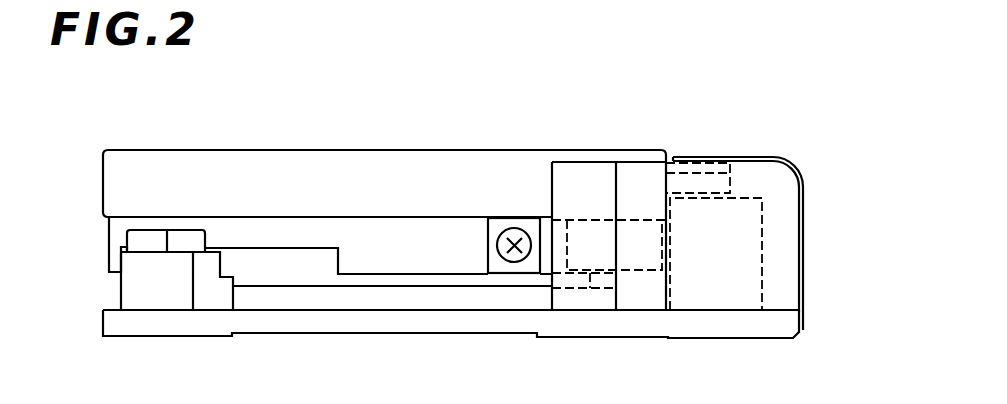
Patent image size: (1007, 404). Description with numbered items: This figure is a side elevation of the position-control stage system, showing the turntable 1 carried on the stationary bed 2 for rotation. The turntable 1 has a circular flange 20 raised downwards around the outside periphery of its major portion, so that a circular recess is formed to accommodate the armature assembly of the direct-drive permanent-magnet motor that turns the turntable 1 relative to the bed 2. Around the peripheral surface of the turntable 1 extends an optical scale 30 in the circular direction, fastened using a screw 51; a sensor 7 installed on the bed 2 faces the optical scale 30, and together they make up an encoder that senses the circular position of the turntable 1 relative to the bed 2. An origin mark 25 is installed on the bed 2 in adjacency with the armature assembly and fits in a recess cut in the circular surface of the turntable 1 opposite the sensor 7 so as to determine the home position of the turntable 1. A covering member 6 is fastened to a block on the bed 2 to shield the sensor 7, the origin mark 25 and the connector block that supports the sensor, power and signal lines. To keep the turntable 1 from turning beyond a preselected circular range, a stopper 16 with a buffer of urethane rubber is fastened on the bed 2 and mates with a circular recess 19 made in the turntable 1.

The turntable 1 is at (171, 176).
The stationary bed 2 is at (175, 323).
The covering member 6 is at (804, 188).
The sensor 7 is at (740, 254).
The stopper 16 is at (150, 283).
The circular recess 19 is at (280, 248).
The circular flange 20 is at (403, 240).
The origin mark 25 is at (705, 183).
The optical scale 30 is at (598, 233).
The screw 51 is at (514, 229).